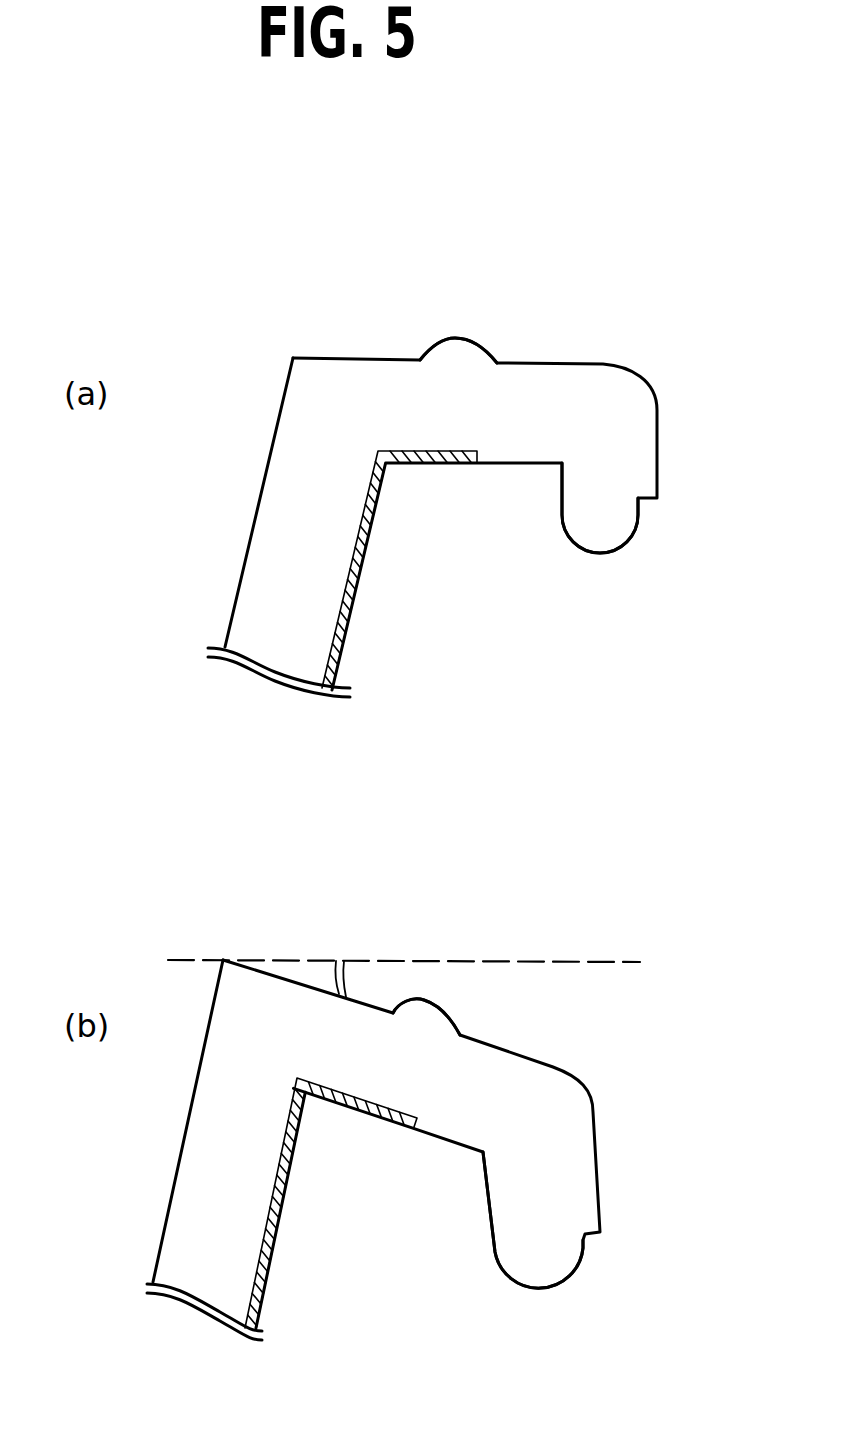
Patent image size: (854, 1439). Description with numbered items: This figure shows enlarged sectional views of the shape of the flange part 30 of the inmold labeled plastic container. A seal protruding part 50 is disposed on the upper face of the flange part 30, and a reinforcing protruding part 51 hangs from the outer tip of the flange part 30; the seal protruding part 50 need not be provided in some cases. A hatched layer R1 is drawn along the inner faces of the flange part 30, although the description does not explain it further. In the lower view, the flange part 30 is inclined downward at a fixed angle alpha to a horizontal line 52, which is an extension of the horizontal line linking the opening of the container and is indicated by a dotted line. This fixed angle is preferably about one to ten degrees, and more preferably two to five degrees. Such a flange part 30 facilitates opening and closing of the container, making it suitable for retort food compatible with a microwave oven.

The flange part 30 is at (403, 305).
The seal protruding part 50 is at (460, 346).
The reinforcing protruding part 51 is at (597, 514).
The horizontal line 52 is at (404, 918).
The elastic contact layer R1 is at (347, 610).